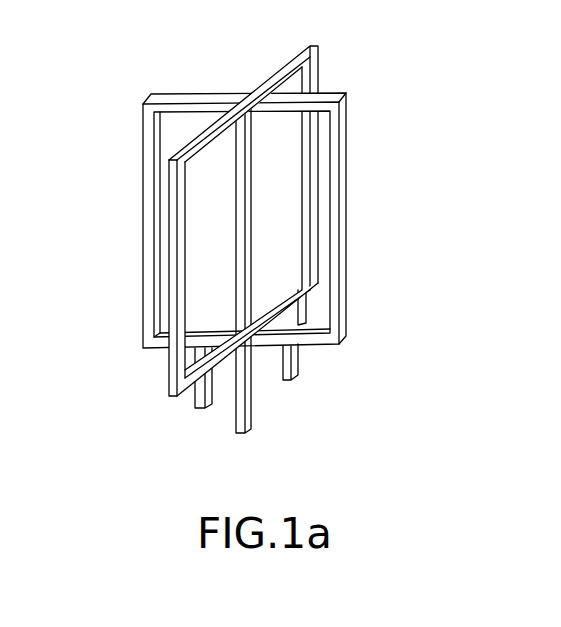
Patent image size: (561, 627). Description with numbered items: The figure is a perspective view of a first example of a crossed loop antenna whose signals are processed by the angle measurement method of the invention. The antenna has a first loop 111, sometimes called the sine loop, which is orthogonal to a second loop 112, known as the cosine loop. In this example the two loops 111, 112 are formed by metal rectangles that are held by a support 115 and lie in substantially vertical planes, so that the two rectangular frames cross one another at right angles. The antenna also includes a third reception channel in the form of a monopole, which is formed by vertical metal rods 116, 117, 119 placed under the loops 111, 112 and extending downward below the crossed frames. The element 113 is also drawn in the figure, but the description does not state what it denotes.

The first loop 111 is at (168, 93).
The second loop 112 is at (318, 72).
The support leg 113 is at (298, 357).
The support 115 is at (249, 388).
The vertical metal rod 116 is at (167, 352).
The vertical metal rod 117 is at (197, 398).
The vertical metal rod 119 is at (309, 305).